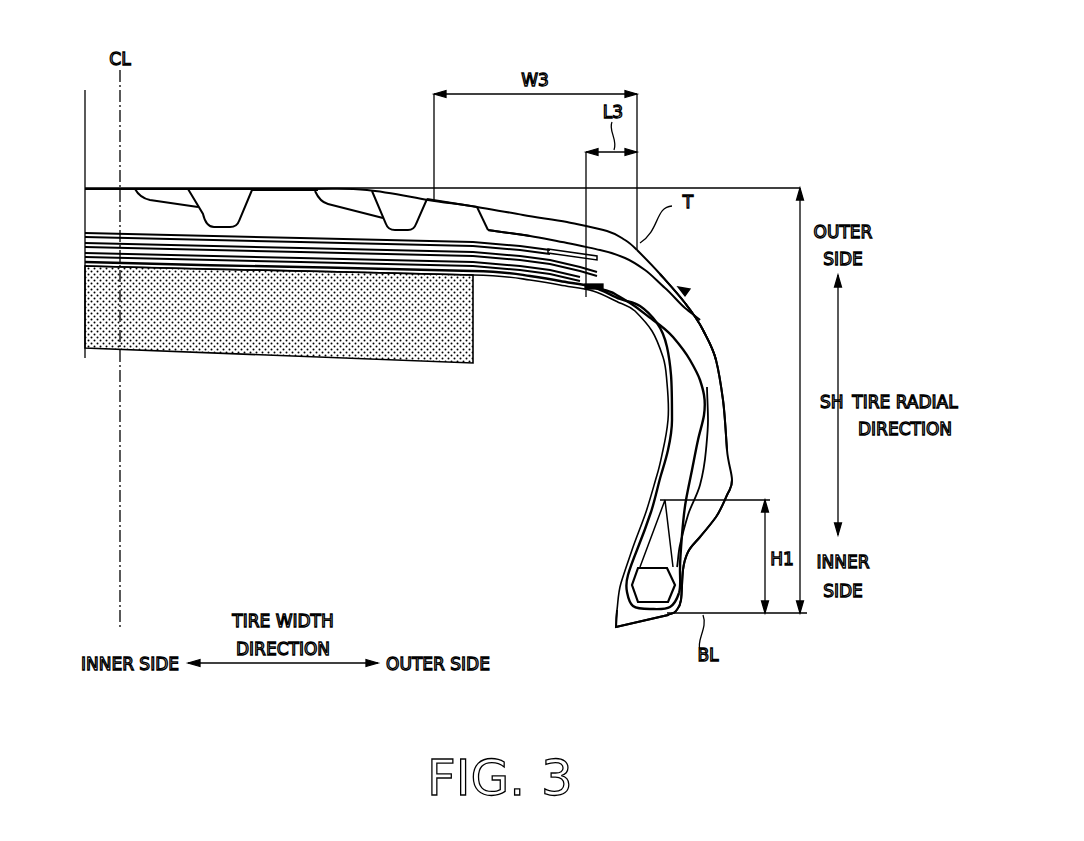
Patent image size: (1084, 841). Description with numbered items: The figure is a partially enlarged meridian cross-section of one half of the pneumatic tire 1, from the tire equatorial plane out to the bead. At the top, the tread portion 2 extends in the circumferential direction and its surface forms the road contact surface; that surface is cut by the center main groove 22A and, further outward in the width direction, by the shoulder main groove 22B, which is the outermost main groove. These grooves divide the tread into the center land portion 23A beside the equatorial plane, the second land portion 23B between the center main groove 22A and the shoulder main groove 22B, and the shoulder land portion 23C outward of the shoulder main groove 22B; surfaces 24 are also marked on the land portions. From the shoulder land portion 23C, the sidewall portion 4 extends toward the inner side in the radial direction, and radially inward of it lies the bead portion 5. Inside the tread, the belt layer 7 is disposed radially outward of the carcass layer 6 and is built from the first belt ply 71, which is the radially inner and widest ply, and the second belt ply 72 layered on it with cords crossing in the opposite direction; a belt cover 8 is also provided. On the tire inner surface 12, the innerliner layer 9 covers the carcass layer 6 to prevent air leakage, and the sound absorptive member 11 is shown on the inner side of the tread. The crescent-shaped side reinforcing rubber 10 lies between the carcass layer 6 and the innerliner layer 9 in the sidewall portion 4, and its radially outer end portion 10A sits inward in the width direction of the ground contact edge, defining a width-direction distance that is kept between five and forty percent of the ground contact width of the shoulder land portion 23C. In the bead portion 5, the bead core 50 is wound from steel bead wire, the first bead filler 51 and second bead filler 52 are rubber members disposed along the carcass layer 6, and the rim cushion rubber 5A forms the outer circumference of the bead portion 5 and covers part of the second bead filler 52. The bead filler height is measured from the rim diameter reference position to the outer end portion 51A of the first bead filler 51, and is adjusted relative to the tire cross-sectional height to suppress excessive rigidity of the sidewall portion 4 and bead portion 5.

The pneumatic tire 1 is at (380, 62).
The tread portion 2 is at (182, 172).
The sidewall portion 4 is at (738, 357).
The bead portion 5 is at (673, 507).
The rim cushion rubber 5A is at (685, 537).
The carcass layer 6 is at (690, 337).
The belt layer 7 is at (341, 316).
The belt cover 8 is at (566, 249).
The innerliner layer 9 is at (655, 480).
The side reinforcing rubber 10 is at (395, 435).
The end portion of side reinforcing rubber 10A is at (584, 288).
The sound absorptive member 11 is at (228, 347).
The tire inner surface 12 is at (660, 373).
The center main groove 22A is at (246, 205).
The shoulder main groove 22B is at (418, 205).
The center land portion 23A is at (100, 188).
The second land portion 23B is at (303, 188).
The shoulder land portion 23C is at (468, 200).
The inclined surface 24 is at (150, 196).
The bead core 50 is at (637, 583).
The first bead filler 51 is at (650, 562).
The outer end portion of first bead filler 51A is at (728, 500).
The second bead filler 52 is at (702, 472).
The first belt ply 71 is at (558, 273).
The second belt ply 72 is at (525, 265).